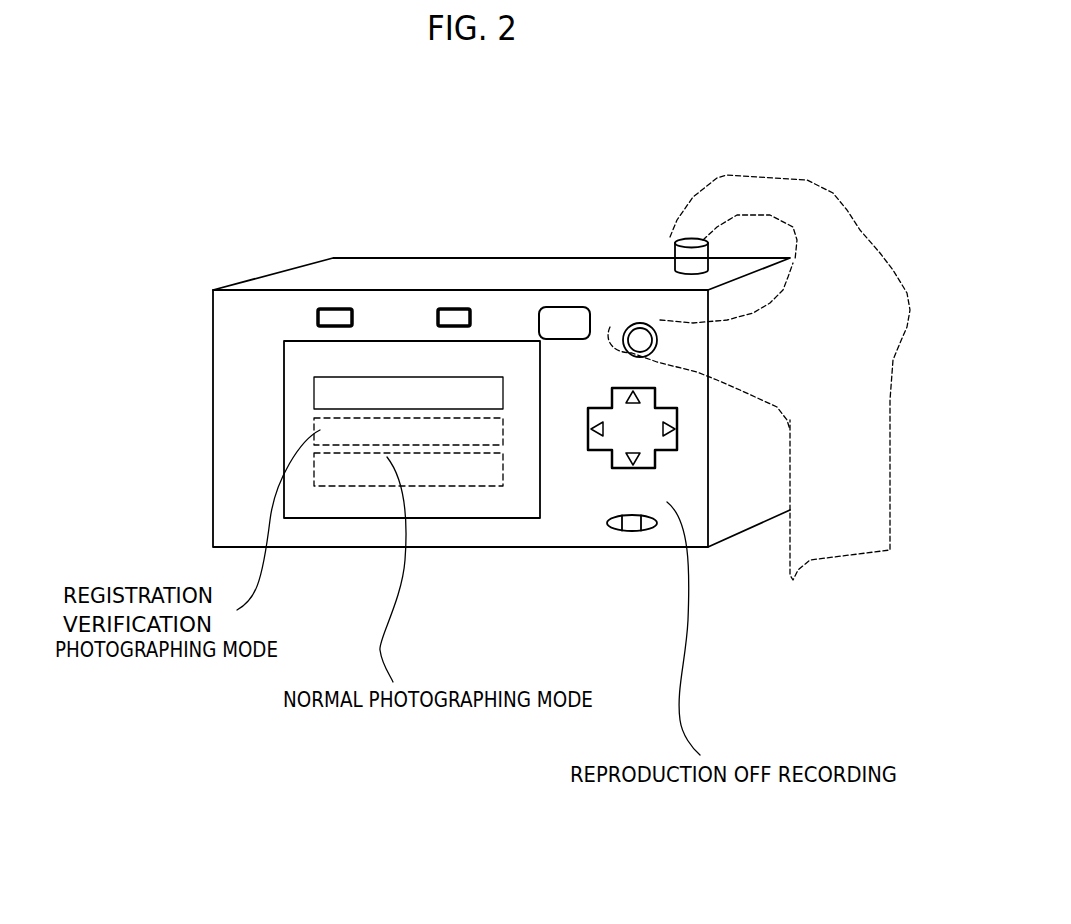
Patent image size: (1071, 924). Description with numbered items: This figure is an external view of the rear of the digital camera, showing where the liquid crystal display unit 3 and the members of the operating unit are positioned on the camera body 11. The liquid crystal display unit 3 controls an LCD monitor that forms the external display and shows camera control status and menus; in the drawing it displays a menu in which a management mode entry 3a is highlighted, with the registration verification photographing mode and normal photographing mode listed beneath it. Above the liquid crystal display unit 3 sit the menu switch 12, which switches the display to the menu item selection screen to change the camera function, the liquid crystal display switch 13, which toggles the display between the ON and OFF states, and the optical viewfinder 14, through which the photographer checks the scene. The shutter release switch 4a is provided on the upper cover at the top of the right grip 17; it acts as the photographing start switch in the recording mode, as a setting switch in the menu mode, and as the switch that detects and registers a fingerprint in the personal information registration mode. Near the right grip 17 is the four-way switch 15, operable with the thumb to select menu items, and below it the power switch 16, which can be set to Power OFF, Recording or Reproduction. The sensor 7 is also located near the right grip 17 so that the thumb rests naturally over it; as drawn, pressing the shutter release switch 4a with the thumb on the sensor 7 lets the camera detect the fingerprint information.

The liquid crystal display unit 3 is at (284, 355).
The management mode menu item 3a is at (304, 391).
The shutter release switch 4a is at (682, 258).
The sensor 7 is at (668, 363).
The camera body 11 is at (503, 270).
The menu switch 12 is at (326, 308).
The liquid crystal display switch 13 is at (462, 308).
The optical viewfinder 14 is at (568, 308).
The four-way switch 15 is at (598, 446).
The power switch 16 is at (630, 530).
The right grip 17 is at (733, 393).